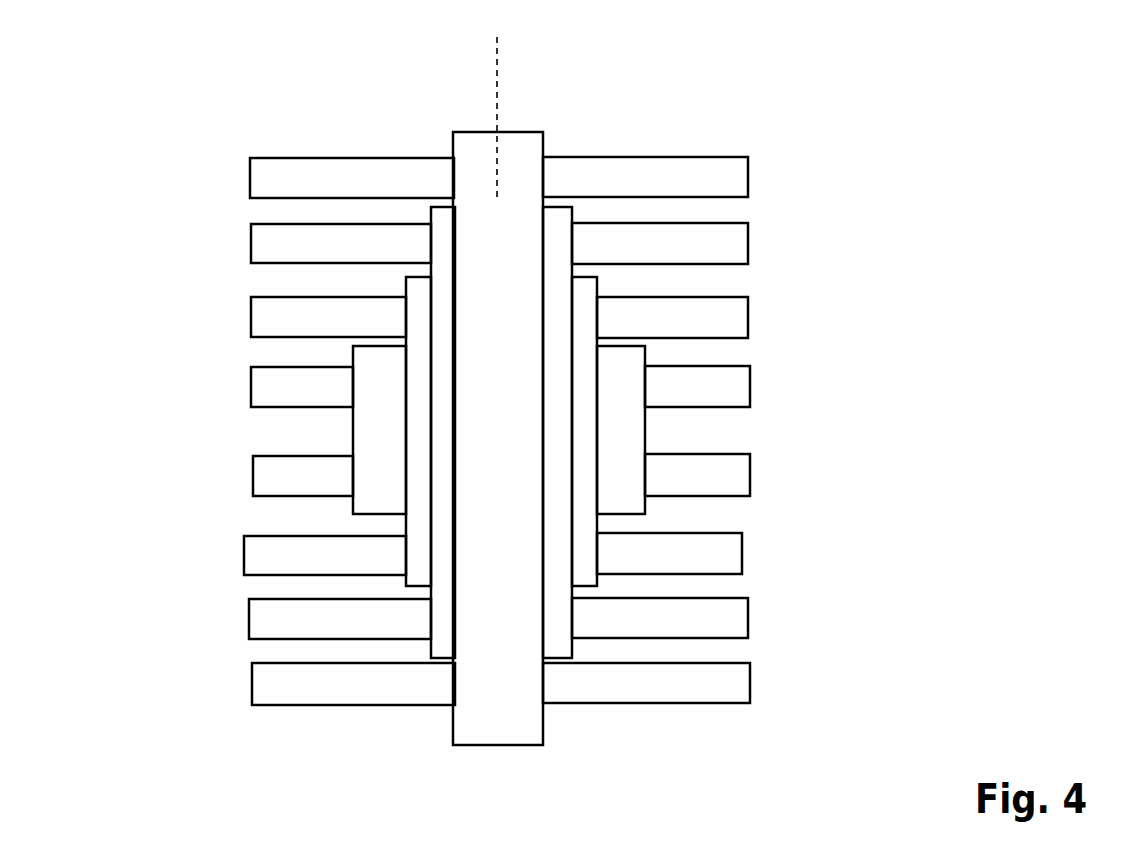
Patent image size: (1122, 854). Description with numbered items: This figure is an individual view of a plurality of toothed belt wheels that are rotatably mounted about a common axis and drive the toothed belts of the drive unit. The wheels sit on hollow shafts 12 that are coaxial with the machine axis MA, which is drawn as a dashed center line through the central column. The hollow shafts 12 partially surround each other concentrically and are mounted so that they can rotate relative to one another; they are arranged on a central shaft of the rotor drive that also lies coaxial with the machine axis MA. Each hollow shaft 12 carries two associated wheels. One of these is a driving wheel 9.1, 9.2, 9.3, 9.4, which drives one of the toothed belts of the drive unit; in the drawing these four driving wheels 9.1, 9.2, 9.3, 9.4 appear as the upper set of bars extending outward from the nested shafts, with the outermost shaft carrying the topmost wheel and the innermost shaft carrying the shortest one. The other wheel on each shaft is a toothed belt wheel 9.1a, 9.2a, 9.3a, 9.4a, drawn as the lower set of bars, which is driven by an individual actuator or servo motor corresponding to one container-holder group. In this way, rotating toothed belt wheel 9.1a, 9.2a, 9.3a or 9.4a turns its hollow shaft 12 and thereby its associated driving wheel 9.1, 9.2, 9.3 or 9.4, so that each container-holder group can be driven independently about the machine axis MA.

The hollow shaft 12 is at (475, 160).
The machine axis MA is at (522, 117).
The driving wheel 9.1 is at (727, 178).
The driving wheel 9.2 is at (749, 244).
The driving wheel 9.3 is at (727, 314).
The driving wheel 9.4 is at (725, 384).
The toothed belt wheel 9.4a is at (727, 474).
The toothed belt wheel 9.3a is at (718, 552).
The toothed belt wheel 9.2a is at (730, 616).
The toothed belt wheel 9.1a is at (750, 683).